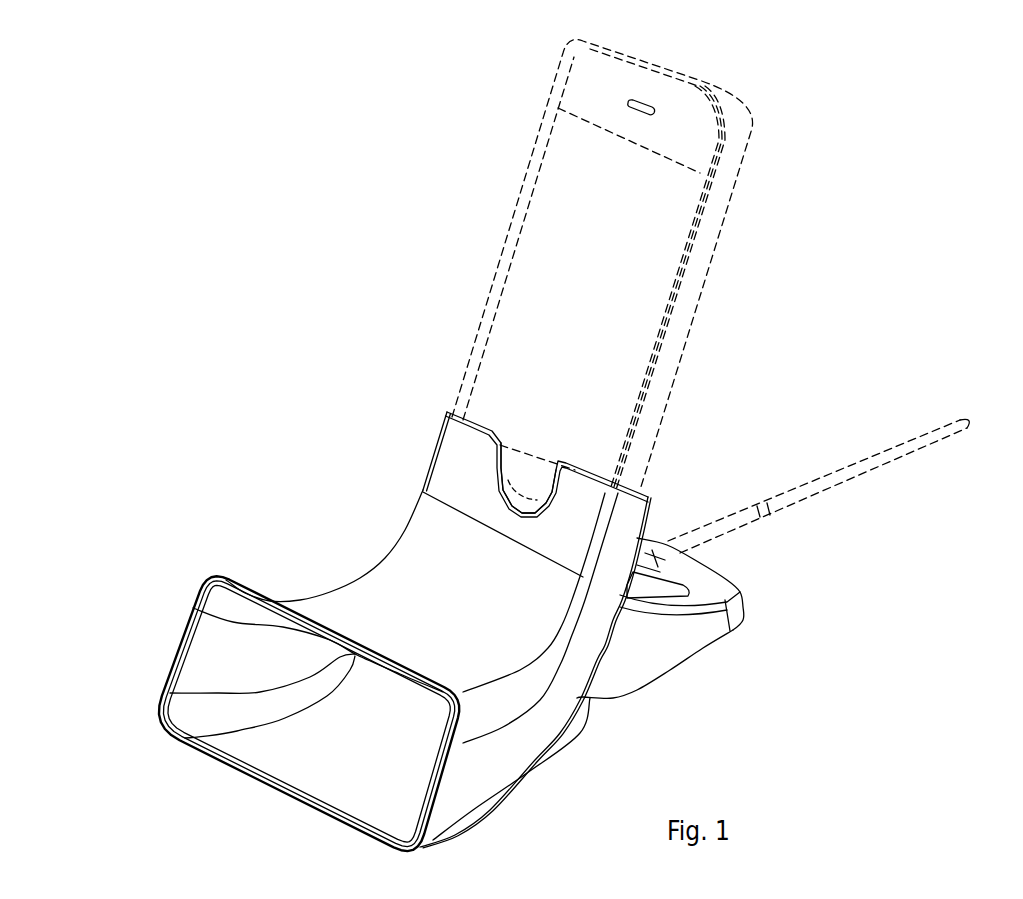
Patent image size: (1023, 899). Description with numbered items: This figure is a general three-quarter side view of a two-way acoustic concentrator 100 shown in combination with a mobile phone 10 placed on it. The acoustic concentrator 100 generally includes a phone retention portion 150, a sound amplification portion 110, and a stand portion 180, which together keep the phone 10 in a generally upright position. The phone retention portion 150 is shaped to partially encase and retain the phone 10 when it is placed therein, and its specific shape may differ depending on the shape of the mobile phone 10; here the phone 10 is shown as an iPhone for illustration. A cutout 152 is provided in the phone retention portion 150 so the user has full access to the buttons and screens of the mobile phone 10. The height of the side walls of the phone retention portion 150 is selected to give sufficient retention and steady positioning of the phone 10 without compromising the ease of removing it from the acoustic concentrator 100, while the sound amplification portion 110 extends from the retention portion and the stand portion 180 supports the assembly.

The two-way acoustic concentrator 100 is at (245, 373).
The mobile phone 10 is at (707, 282).
The phone retention portion 150 is at (448, 452).
The cutout 152 is at (505, 470).
The sound amplification portion 110 is at (373, 590).
The stand portion 180 is at (707, 648).